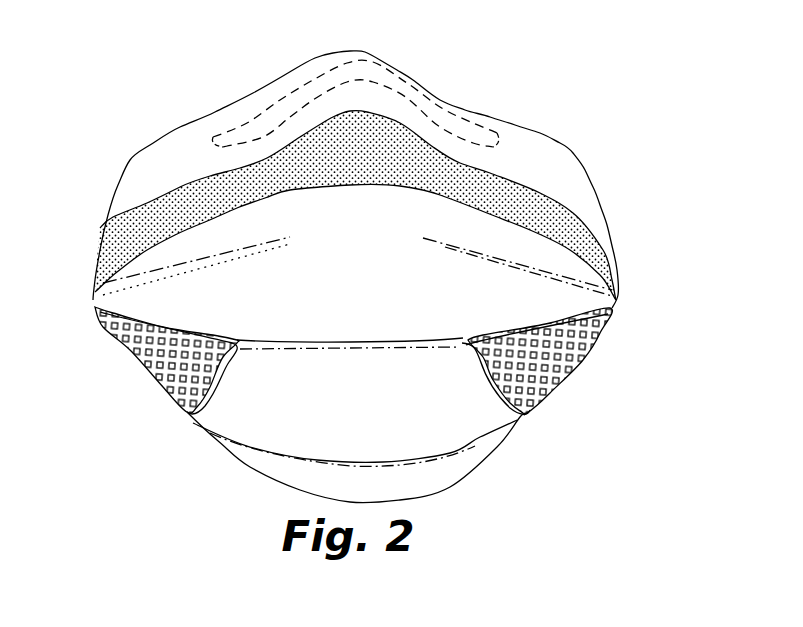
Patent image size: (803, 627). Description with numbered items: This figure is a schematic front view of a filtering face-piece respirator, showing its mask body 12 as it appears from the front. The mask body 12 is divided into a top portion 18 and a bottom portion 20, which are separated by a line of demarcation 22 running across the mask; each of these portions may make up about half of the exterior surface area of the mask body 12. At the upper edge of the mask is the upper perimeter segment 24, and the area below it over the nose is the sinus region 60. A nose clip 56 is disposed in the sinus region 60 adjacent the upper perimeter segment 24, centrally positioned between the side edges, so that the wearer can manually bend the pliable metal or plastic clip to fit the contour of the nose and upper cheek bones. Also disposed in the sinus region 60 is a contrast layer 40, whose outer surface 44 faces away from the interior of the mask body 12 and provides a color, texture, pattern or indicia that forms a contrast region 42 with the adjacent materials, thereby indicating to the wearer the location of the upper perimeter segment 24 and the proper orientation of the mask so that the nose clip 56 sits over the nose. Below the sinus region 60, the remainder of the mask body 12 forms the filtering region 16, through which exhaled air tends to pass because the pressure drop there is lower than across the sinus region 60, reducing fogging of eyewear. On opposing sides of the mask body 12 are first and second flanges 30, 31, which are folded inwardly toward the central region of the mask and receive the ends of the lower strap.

The mask body 12 is at (574, 89).
The filtering region 16 is at (246, 428).
The top portion 18 is at (344, 291).
The bottom portion 20 is at (344, 426).
The line of demarcation 22 is at (547, 323).
The upper perimeter segment 24 is at (293, 83).
The first flange 30 is at (133, 352).
The second flange 31 is at (570, 353).
The contrast layer 40 is at (162, 148).
The contrast region 42 is at (593, 160).
The outer surface 44 is at (108, 250).
The nose clip 56 is at (425, 100).
The sinus region 60 is at (199, 100).